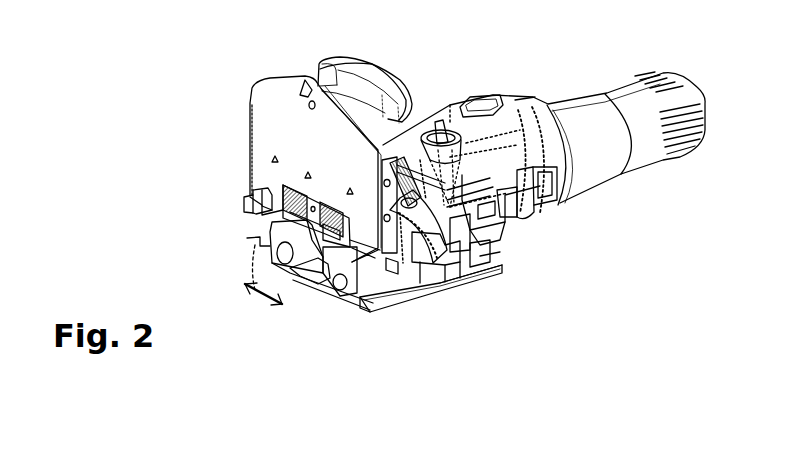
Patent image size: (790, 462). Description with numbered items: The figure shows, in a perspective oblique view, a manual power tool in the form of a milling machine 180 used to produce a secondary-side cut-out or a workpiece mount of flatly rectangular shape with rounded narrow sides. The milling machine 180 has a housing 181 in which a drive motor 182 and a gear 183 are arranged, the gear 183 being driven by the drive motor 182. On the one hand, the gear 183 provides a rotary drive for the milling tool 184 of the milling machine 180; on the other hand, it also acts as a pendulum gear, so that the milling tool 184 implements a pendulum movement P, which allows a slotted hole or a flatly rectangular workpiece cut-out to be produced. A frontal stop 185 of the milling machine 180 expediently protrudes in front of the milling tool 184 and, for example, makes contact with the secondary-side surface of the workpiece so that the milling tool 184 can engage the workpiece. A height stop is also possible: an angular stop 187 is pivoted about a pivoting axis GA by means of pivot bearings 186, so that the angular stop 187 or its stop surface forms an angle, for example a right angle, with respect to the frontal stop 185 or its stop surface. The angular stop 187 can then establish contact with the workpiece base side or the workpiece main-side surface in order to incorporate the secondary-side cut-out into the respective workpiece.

The milling machine 180 is at (580, 98).
The housing 181 is at (547, 107).
The drive motor 182 is at (500, 227).
The gear 183 is at (467, 283).
The milling tool 184 is at (304, 282).
The frontal stop 185 is at (247, 243).
The pivot bearings 186 is at (250, 194).
The angular stop 187 is at (256, 104).
The pivoting axis GA is at (255, 199).
The pendulum movement P is at (257, 300).